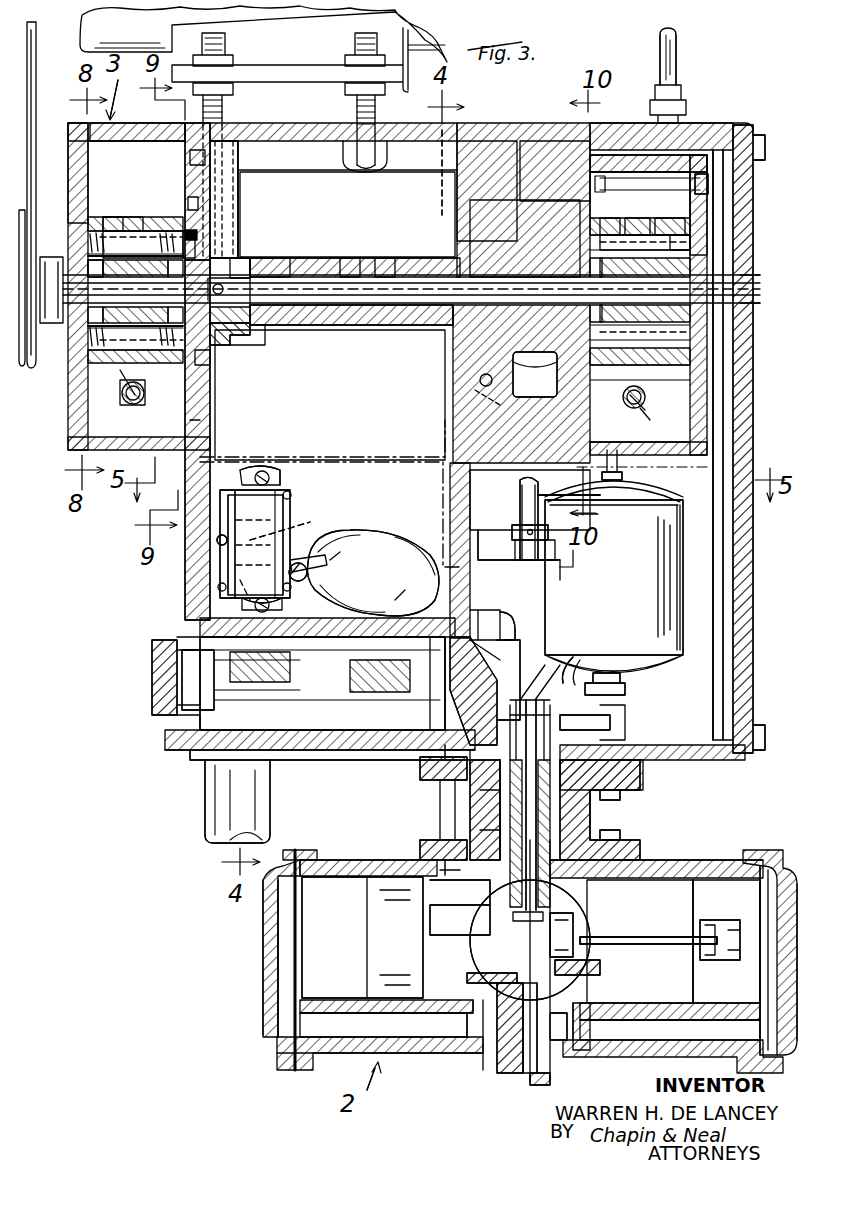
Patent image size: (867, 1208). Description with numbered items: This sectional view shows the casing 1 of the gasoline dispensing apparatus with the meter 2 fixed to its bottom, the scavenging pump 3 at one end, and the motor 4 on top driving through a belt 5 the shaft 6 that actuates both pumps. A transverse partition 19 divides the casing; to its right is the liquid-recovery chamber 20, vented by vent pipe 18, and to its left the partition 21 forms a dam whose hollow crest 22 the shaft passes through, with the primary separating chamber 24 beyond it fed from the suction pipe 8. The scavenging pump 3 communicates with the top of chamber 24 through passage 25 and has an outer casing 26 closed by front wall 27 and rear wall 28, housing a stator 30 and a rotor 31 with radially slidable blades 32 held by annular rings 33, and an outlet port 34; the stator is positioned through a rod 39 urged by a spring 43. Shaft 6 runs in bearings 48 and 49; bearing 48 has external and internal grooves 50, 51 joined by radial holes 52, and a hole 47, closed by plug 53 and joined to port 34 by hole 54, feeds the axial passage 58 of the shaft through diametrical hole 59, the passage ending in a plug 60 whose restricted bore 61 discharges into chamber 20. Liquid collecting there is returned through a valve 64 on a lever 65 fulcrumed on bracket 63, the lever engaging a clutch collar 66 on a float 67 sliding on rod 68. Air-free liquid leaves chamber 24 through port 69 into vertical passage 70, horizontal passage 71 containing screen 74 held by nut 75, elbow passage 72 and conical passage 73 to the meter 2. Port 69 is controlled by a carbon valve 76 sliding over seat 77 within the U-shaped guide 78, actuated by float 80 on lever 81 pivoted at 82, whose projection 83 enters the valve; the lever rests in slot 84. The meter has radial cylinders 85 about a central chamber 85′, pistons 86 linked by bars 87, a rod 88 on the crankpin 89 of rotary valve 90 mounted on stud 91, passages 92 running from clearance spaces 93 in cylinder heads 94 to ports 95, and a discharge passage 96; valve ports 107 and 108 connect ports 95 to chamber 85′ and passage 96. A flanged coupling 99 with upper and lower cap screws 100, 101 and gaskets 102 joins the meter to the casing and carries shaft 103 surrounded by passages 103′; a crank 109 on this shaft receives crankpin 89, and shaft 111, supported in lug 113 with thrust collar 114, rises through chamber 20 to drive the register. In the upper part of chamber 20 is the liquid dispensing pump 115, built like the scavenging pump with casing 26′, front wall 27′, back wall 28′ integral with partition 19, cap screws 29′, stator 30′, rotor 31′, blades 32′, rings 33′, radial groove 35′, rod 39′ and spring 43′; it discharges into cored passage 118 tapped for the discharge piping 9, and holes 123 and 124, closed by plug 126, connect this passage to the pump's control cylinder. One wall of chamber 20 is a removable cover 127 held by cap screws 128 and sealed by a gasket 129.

The casing 1 is at (328, 124).
The meter 2 is at (371, 1079).
The scavenging pump 3 is at (114, 99).
The motor 4 is at (263, 49).
The belt 5 is at (36, 52).
The shaft 6 is at (352, 282).
The suction pipe 8 is at (225, 785).
The fixed piping 9 is at (462, 332).
The vent pipe 18 is at (676, 55).
The transverse partition 19 is at (470, 226).
The liquid-recovery chamber 20 is at (722, 520).
The partition 21 is at (390, 282).
The hollow cylindrical portion 22 is at (328, 258).
The primary separating chamber 24 is at (330, 395).
The passage 25 is at (197, 162).
The hollow outer casing 26 is at (152, 128).
The outer casing 26′ is at (618, 160).
The front closure wall 27 is at (68, 130).
The front wall 27′ is at (698, 160).
The rear wall 28 is at (240, 172).
The back wall 28′ is at (545, 155).
The cap screws 29′ is at (708, 186).
The cylindrical stator 30 is at (105, 224).
The stator 30′ is at (638, 240).
The cylindrical rotor 31 is at (130, 240).
The rotor 31′ is at (700, 208).
The radially slidable blades 32 is at (122, 228).
The blades 32′ is at (672, 240).
The annular ring 33 is at (183, 235).
The annular ring 33′ is at (690, 266).
The outlet port 34 is at (146, 392).
The radial groove 35′ is at (608, 235).
The rod 39 is at (127, 400).
The rod 39′ is at (650, 400).
The spring 43 is at (122, 378).
The spring 43′ is at (661, 423).
The hole 47 is at (200, 182).
The bearing 48 is at (282, 277).
The bearing 49 is at (535, 272).
The external annular groove 50 is at (225, 268).
The internal annular groove 51 is at (245, 272).
The radial holes 52 is at (222, 347).
The plug 53 is at (224, 126).
The hole 54 is at (205, 360).
The axial passage 58 is at (375, 325).
The diametrical hole 59 is at (411, 289).
The plug 60 is at (752, 282).
The restricted bore 61 is at (745, 301).
The bracket 63 is at (497, 612).
The valve 64 is at (510, 640).
The lever 65 is at (565, 675).
The clutch collar 66 is at (625, 692).
The float 67 is at (614, 577).
The vertical rod 68 is at (625, 488).
The port 69 is at (205, 578).
The vertical passage 70 is at (255, 640).
The horizontal passage 71 is at (230, 712).
The elbow passage 72 is at (491, 680).
The conical passage 73 is at (505, 740).
The screen 74 is at (325, 740).
The nut 75 is at (160, 673).
The valve 76 is at (275, 605).
The seat 77 is at (270, 481).
The U-shaped metal frame 78 is at (280, 520).
The float 80 is at (397, 550).
The lever 81 is at (308, 575).
The pivot 82 is at (215, 535).
The projection 83 is at (255, 543).
The slot 84 is at (296, 528).
The radial cylinders 85 is at (708, 860).
The central chamber 85′ is at (497, 872).
The pistons 86 is at (385, 893).
The bars 87 is at (468, 928).
The rod 88 is at (688, 952).
The crankpin 89 is at (567, 908).
The valve 90 is at (586, 973).
The stud 91 is at (515, 1082).
The longitudinal passages 92 is at (425, 1028).
The clearance space 93 is at (790, 875).
The cylinder head 94 is at (770, 855).
The port 95 is at (483, 1013).
The discharge passage 96 is at (539, 1088).
The flanged coupling 99 is at (592, 808).
The screw 100 is at (612, 798).
The cap screws 101 is at (612, 840).
The gaskets 102 is at (420, 763).
The shaft 103 is at (530, 815).
The passages 103′ is at (480, 795).
The inlet port 107 is at (462, 987).
The outlet port 108 is at (590, 987).
The crank 109 is at (576, 916).
The shaft 111 is at (522, 488).
The lug 113 is at (519, 545).
The collar 114 is at (518, 528).
The liquid dispensing pump 115 is at (722, 231).
The cored passage 118 is at (535, 374).
The hole 123 is at (480, 380).
The hole 124 is at (485, 398).
The plug 126 is at (622, 410).
The removable cover 127 is at (752, 592).
The cap screws 128 is at (762, 142).
The gasket 129 is at (725, 700).